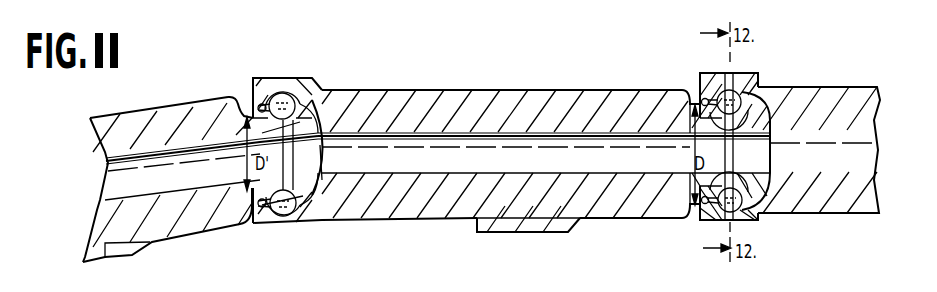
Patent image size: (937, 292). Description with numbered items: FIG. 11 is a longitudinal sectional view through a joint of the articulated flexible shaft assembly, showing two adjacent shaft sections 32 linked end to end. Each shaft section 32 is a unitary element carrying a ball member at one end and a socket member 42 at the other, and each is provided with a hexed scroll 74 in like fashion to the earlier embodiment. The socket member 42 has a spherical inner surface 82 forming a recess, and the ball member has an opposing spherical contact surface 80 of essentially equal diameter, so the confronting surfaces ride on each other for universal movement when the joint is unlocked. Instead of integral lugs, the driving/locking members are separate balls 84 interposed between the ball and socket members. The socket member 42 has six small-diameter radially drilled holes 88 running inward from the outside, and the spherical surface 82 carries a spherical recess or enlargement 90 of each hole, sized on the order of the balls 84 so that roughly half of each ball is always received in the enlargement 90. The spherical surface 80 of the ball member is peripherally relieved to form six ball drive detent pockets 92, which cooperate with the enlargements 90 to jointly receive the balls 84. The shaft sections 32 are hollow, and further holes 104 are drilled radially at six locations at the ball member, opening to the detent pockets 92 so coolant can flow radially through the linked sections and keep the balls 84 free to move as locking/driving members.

The shaft sections 32 is at (535, 90).
The socket member 42 is at (312, 92).
The hexed scroll 74 is at (534, 232).
The spherical contact surface 80 is at (284, 217).
The spherical surface 82 is at (310, 196).
The balls 84 is at (265, 105).
The radially drilled holes 88 is at (285, 92).
The spherical recess or enlargement 90 is at (300, 100).
The ball drive detent pockets 92 is at (252, 117).
The radially drilled holes 104 is at (283, 141).